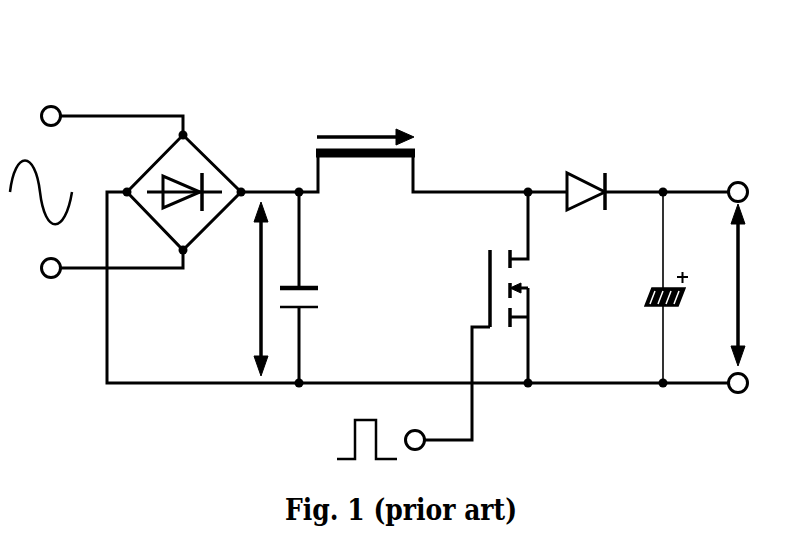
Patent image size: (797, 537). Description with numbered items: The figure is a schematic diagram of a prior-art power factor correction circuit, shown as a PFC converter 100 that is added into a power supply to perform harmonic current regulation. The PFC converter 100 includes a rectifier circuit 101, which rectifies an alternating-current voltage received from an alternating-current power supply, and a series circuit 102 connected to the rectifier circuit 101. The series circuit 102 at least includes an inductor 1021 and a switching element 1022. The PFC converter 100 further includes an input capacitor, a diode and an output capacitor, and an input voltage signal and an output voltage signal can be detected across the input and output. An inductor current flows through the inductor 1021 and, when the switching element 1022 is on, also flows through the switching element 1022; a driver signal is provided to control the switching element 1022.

The PFC converter 100 is at (151, 29).
The rectifier circuit 101 is at (183, 92).
The series circuit 102 is at (431, 90).
The inductor 1021 is at (413, 151).
The switching element 1022 is at (497, 250).